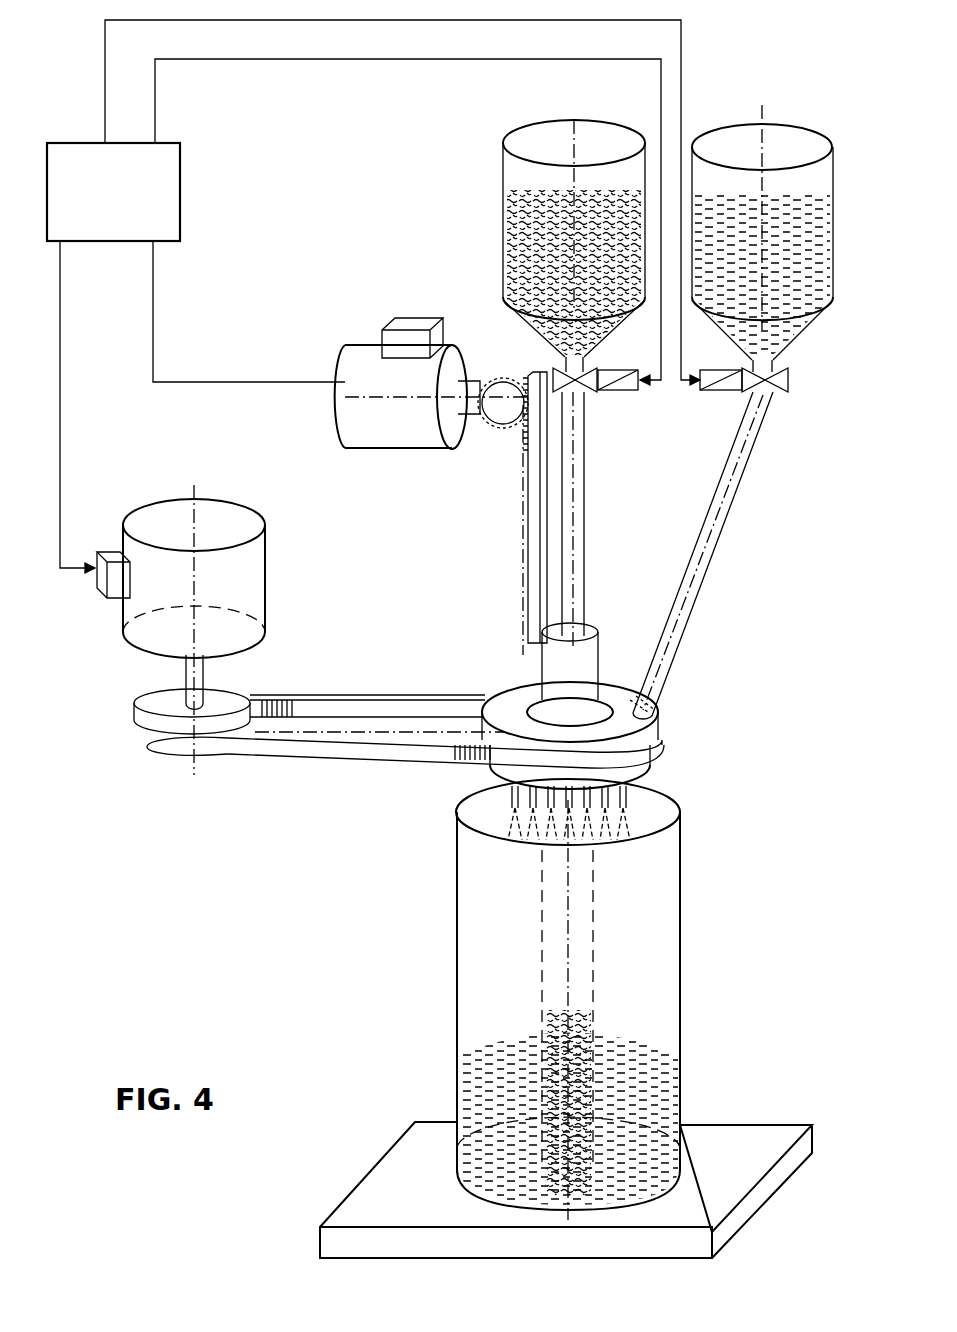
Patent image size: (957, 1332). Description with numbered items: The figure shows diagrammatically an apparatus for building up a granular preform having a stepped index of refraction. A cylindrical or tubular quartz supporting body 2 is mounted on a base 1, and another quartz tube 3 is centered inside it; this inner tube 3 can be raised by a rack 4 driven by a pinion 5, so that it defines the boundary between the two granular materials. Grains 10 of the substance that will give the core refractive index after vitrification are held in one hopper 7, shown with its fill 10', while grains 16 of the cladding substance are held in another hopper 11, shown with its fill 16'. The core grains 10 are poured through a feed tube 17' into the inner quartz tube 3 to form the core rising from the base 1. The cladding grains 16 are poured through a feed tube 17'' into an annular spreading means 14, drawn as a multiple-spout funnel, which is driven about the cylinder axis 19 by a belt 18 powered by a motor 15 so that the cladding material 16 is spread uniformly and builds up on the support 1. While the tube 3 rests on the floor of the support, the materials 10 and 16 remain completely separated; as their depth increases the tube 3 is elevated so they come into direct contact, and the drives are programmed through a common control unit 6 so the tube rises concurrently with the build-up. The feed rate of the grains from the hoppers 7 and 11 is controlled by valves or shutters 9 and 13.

The base 1 is at (728, 1190).
The quartz supporting body 2 is at (660, 990).
The quartz tube 3 is at (557, 688).
The rack 4 is at (533, 590).
The pinion 5 is at (498, 410).
The control unit 6 is at (373, 296).
The hopper 7 is at (527, 183).
The valve or shutter 9 is at (593, 392).
The grains 10 is at (537, 1081).
The fibres in hopper 10' is at (509, 272).
The hopper 11 is at (775, 148).
The valve or shutter 13 is at (790, 383).
The annular spreading means 14 is at (640, 765).
The motor 15 is at (155, 615).
The grains 16 is at (569, 1119).
The liquid in reservoir 16' is at (801, 274).
The feed tube 17' is at (611, 521).
The feed tube 17'' is at (725, 555).
The belt 18 is at (335, 762).
The cylinder axis 19 is at (567, 915).